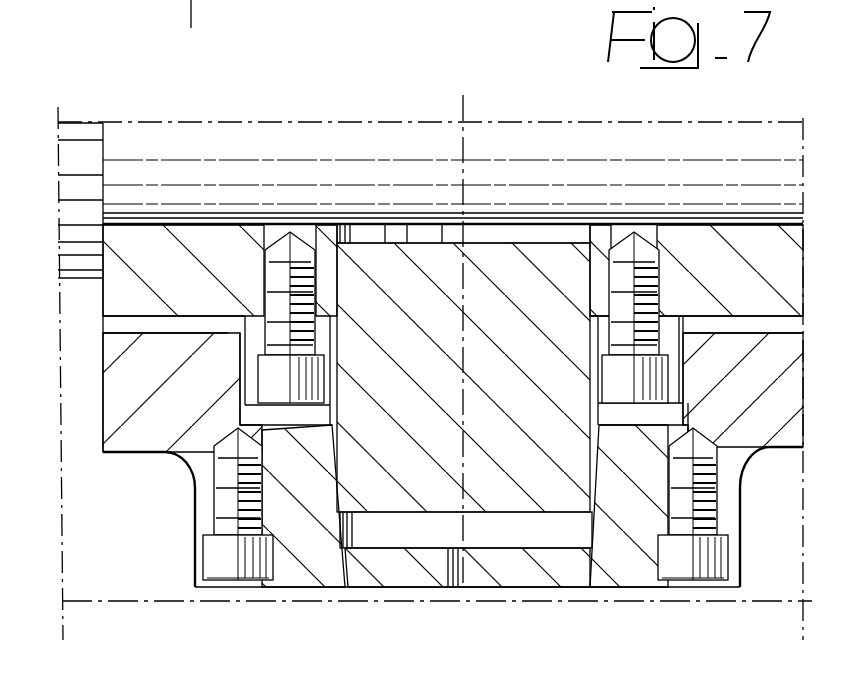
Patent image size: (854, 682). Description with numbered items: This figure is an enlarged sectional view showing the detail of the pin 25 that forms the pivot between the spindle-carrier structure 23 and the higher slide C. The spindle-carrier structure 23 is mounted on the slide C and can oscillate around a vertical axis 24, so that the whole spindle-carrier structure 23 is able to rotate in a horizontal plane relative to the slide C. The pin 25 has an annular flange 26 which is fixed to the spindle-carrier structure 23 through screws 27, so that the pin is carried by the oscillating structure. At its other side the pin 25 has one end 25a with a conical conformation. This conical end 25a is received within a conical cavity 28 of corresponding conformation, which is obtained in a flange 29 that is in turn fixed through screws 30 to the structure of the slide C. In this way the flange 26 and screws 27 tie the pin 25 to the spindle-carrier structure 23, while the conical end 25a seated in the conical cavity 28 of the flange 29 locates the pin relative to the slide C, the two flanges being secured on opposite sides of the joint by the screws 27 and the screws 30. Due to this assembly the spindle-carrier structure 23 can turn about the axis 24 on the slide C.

The spindle-carrier structure 23 is at (116, 262).
The vertical axis 24 is at (462, 115).
The pin 25 is at (500, 487).
The end with conical conformation 25a is at (336, 482).
The annular flange 26 is at (672, 345).
The screws 27 is at (262, 250).
The conical cavity 28 is at (588, 482).
The flange 29 is at (615, 578).
The screws 30 is at (230, 565).
The higher slide C is at (150, 462).